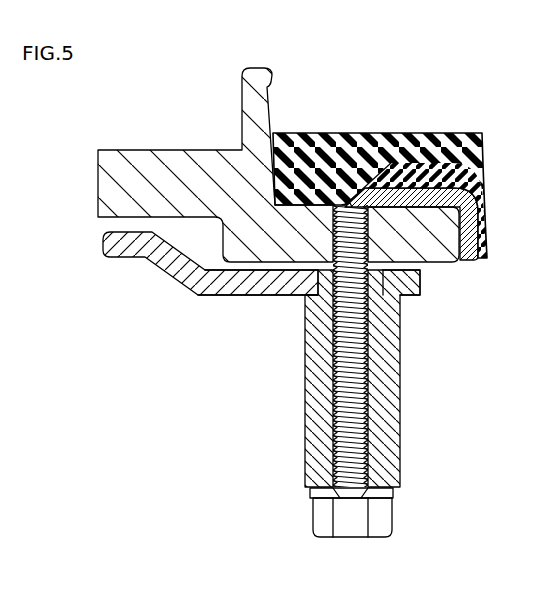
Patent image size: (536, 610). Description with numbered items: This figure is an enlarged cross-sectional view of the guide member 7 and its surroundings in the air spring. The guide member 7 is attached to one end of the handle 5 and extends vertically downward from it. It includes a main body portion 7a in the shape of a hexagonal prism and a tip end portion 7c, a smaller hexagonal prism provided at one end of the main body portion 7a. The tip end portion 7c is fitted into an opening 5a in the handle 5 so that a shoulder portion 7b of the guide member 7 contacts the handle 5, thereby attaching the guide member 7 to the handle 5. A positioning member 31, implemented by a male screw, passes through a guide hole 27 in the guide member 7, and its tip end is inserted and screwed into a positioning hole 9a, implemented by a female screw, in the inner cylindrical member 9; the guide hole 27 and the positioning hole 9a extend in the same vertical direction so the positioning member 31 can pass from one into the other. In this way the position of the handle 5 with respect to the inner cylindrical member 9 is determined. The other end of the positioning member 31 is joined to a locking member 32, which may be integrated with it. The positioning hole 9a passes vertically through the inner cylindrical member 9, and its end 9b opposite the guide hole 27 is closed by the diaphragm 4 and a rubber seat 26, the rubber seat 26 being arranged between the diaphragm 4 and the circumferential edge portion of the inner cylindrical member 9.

The diaphragm 4 is at (440, 148).
The handle 5 is at (183, 277).
The opening 5a is at (290, 295).
The guide member 7 is at (395, 378).
The main body portion 7a is at (414, 405).
The shoulder portion 7b is at (393, 320).
The tip end portion 7c is at (393, 350).
The inner cylindrical member 9 is at (438, 249).
The positioning hole 9a is at (333, 213).
The end of positioning hole 9b is at (342, 203).
The rubber seat 26 is at (480, 262).
The guide hole 27 is at (292, 338).
The positioning member 31 is at (353, 468).
The locking member 32 is at (380, 523).